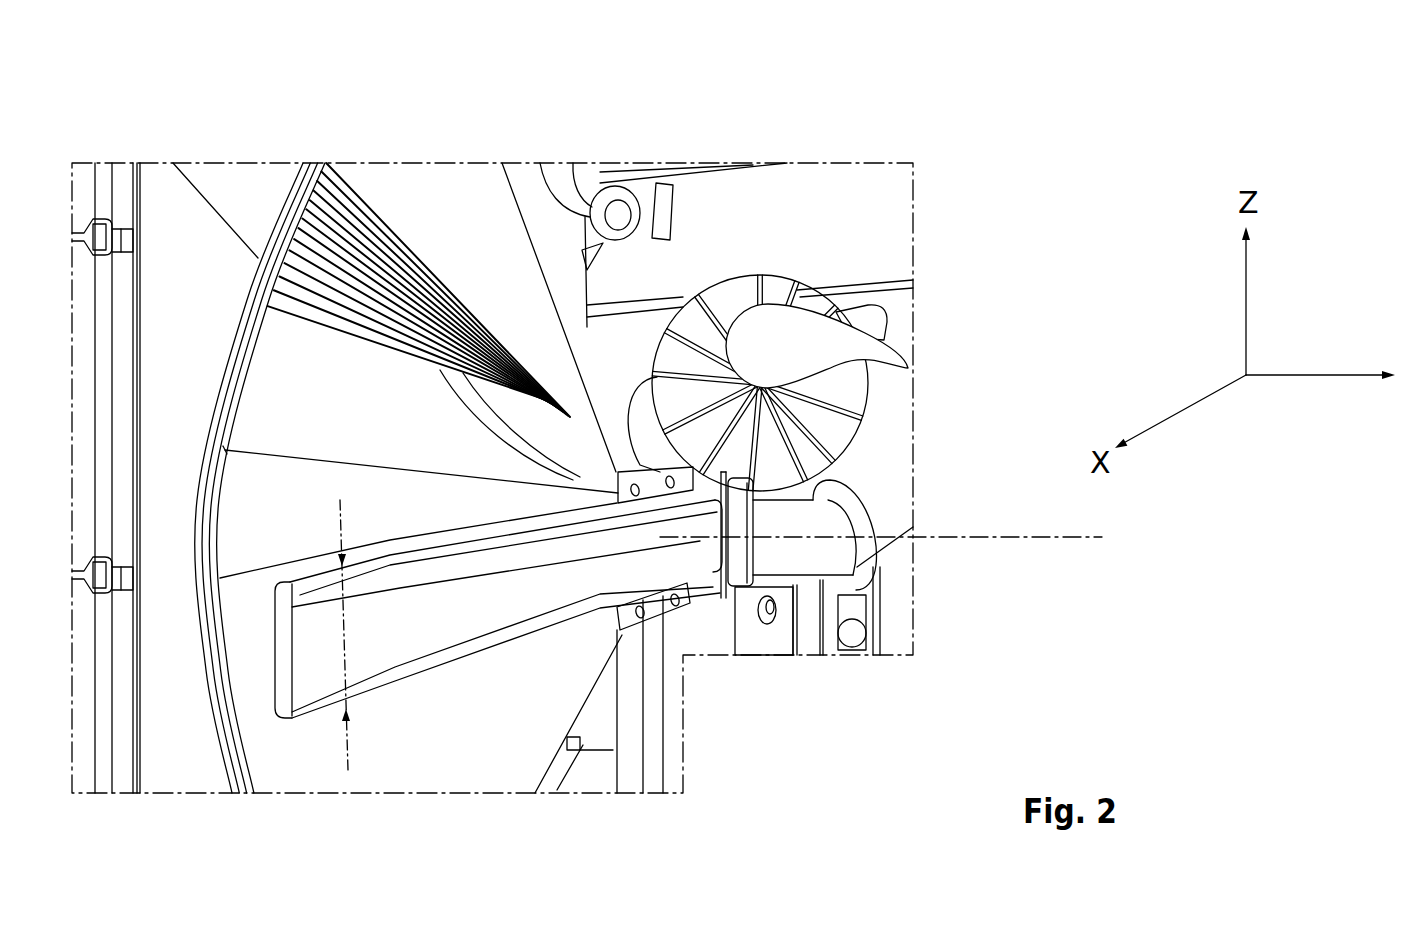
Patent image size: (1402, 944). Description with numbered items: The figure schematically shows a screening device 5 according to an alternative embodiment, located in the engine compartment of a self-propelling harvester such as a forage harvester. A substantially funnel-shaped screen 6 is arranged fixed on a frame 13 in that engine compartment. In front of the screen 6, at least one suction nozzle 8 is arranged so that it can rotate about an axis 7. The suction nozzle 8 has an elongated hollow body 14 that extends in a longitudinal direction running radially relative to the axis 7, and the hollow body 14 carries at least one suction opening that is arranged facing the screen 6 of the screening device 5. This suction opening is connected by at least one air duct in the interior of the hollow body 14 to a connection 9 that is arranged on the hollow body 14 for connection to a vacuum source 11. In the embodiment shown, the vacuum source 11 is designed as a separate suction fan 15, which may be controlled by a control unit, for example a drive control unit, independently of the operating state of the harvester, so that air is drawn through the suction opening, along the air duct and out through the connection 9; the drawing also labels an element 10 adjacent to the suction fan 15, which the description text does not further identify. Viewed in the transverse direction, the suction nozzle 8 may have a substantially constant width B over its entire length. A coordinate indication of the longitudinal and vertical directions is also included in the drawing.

The screening device 5 is at (286, 138).
The screen 6 is at (385, 273).
The axis 7 is at (993, 540).
The suction nozzle 8 is at (705, 592).
The connection 9 is at (692, 470).
The hose 10 is at (885, 387).
The vacuum source 11 is at (782, 273).
The frame 13 is at (85, 170).
The hollow body 14 is at (540, 587).
The suction fan 15 is at (727, 293).
The width B is at (317, 587).